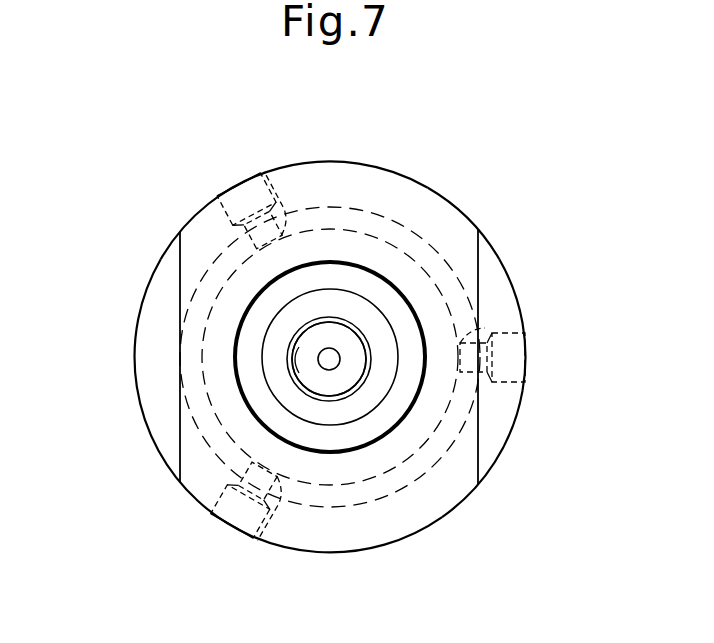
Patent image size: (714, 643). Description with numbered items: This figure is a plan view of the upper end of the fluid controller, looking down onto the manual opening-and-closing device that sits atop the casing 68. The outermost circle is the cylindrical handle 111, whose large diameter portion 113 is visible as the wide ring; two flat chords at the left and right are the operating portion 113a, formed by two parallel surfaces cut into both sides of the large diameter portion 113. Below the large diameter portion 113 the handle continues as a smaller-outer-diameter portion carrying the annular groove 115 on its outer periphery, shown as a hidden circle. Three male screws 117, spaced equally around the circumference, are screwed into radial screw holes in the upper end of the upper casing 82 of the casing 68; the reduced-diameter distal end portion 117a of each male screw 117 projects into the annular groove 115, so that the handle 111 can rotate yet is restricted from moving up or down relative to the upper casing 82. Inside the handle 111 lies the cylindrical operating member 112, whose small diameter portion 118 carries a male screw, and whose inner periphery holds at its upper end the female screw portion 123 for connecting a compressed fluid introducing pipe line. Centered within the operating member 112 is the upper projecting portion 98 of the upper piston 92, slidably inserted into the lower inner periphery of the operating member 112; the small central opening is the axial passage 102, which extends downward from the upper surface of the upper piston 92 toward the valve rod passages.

The casing 68 is at (509, 273).
The upper casing 82 is at (502, 418).
The upper piston 92 is at (347, 370).
The upper projecting portion 98 is at (358, 375).
The axial passage 102 is at (328, 363).
The handle 111 is at (392, 169).
The operating member 112 is at (378, 288).
The large diameter portion 113 is at (312, 177).
The operating portion 113a is at (180, 282).
The annular groove 115 is at (300, 554).
The male screw 117 is at (233, 193).
The distal end portion 117a is at (485, 328).
The small diameter portion 118 is at (258, 386).
The female screw portion 123 is at (302, 378).